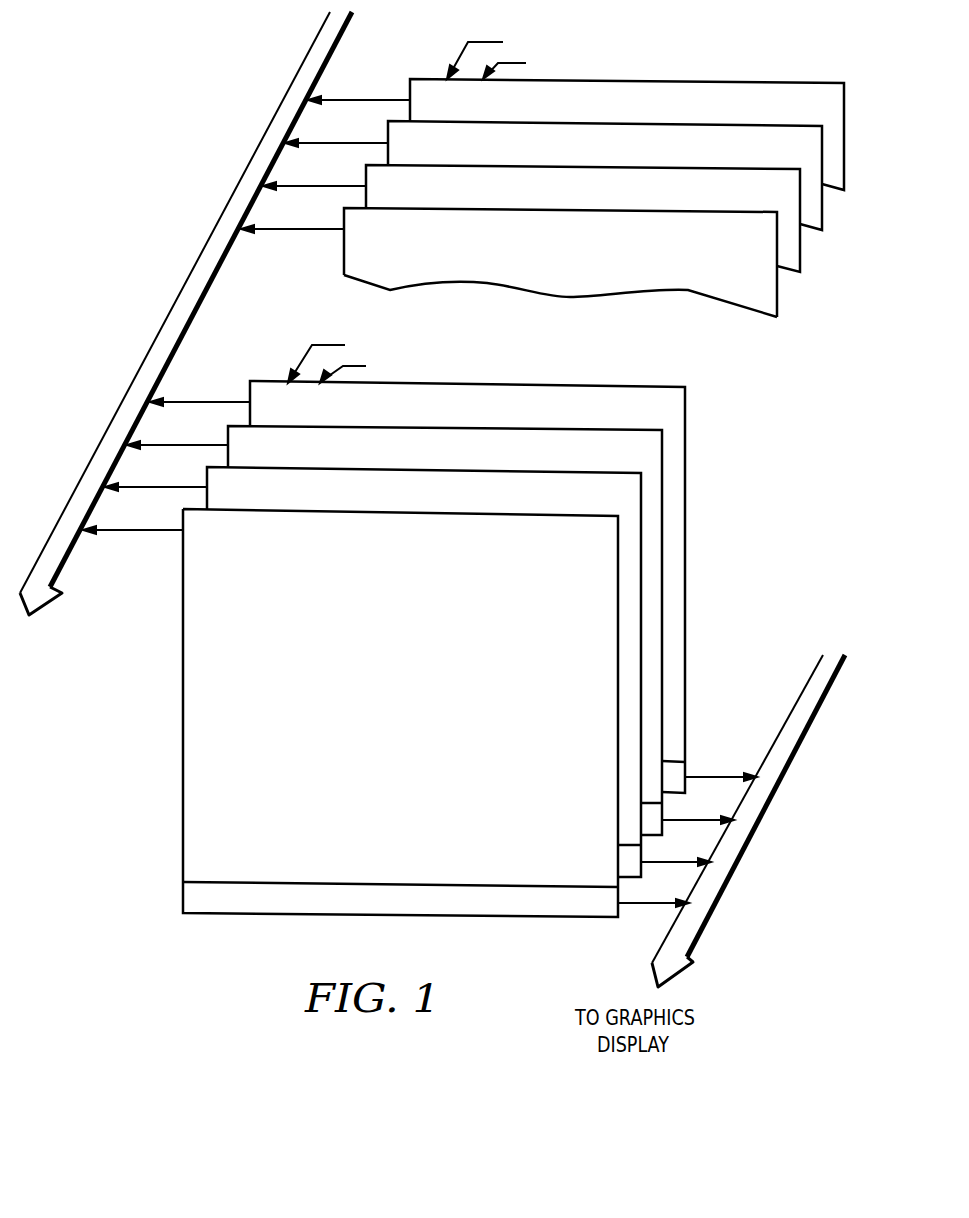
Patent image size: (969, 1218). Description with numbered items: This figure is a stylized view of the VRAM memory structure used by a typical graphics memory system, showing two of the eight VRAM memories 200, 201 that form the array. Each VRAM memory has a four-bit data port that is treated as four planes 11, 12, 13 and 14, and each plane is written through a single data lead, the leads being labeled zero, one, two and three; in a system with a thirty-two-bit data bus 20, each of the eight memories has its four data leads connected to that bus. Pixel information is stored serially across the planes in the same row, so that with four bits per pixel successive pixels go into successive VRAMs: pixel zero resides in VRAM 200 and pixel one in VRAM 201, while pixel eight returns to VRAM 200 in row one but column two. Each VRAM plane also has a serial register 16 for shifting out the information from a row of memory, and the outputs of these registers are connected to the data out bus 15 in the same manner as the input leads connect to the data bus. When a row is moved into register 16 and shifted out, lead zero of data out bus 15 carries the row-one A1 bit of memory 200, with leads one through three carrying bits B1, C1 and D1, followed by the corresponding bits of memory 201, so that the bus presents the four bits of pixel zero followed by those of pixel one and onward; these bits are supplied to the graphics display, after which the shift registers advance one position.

The data bus 20 is at (208, 246).
The VRAM memory 201 is at (773, 300).
The VRAM memory 200 is at (420, 625).
The plane 14 is at (688, 398).
The plane 13 is at (662, 460).
The plane 12 is at (641, 520).
The plane 11 is at (618, 580).
The serial register 16 is at (182, 887).
The data out bus 15 is at (808, 732).